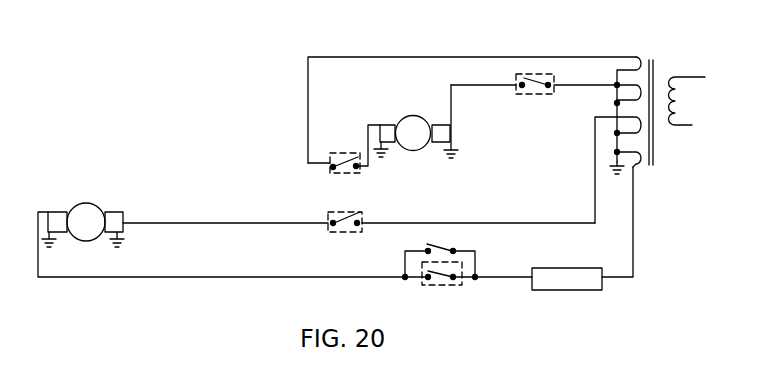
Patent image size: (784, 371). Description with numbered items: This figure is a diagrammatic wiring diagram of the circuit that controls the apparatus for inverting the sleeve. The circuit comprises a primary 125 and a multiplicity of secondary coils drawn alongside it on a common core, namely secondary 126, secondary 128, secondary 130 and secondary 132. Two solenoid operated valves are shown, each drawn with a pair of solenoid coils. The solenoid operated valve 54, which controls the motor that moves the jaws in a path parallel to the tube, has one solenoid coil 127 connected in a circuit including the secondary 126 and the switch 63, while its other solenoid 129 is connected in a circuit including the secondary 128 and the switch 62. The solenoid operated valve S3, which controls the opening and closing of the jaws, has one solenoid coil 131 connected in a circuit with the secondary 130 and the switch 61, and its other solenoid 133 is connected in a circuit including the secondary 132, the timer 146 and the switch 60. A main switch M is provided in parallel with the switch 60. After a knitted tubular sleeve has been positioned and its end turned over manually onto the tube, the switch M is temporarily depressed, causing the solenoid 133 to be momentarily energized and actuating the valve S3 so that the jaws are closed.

The solenoid operated valve S3 is at (96, 205).
The solenoid operated valve 54 is at (417, 150).
The solenoid coil 133 is at (58, 218).
The solenoid coil 131 is at (119, 222).
The solenoid coil 127 is at (389, 125).
The solenoid coil 129 is at (448, 135).
The switch 63 is at (336, 166).
The switch 62 is at (541, 73).
The switch 61 is at (362, 216).
The switch 60 is at (443, 283).
The main switch M is at (474, 233).
The timer 146 is at (537, 290).
The secondary 126 is at (637, 57).
The secondary 128 is at (632, 86).
The secondary 130 is at (637, 133).
The secondary 132 is at (641, 165).
The primary 125 is at (667, 78).